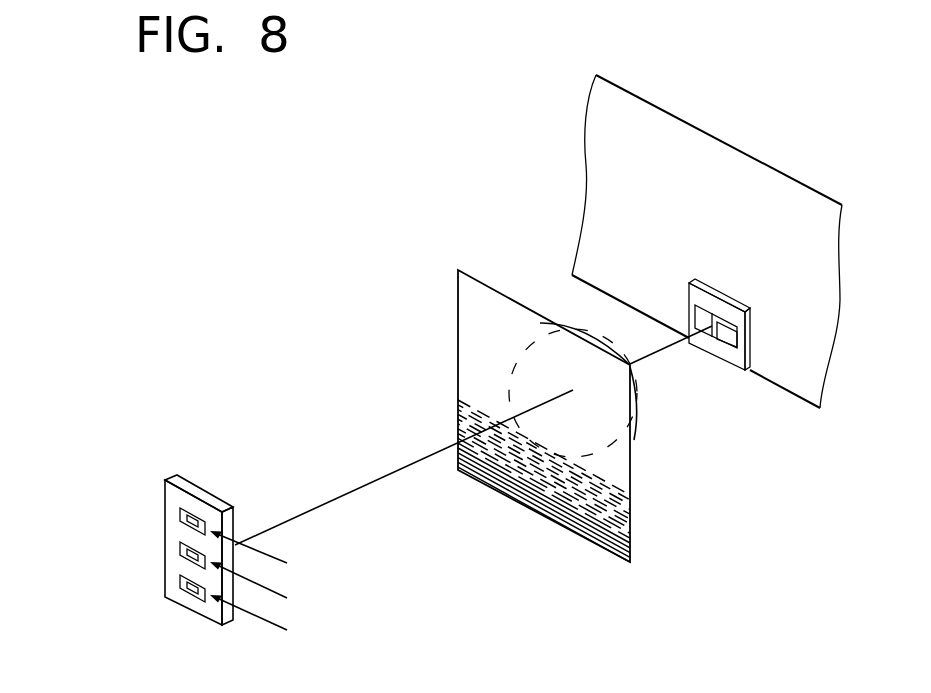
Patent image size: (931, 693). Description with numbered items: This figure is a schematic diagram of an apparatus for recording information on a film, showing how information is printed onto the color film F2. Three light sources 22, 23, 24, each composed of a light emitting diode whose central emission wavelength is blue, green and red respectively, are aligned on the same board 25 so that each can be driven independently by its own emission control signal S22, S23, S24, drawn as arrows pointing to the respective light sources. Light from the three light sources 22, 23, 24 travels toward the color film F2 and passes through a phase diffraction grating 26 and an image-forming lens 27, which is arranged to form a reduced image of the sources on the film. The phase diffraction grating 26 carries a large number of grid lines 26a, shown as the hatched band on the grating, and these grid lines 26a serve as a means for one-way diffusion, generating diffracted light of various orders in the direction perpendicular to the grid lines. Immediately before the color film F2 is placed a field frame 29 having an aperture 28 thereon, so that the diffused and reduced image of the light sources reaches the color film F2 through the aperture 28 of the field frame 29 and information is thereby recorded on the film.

The color film F2 is at (715, 155).
The light source 22 is at (182, 583).
The light source 23 is at (183, 554).
The light source 24 is at (180, 515).
The light receiving element block 25 is at (207, 492).
The phase diffraction grating 26 is at (473, 307).
The grid lines 26a is at (608, 452).
The image-forming lens 27 is at (580, 325).
The aperture 28 is at (697, 336).
The field frame 29 is at (717, 349).
The emission control signal S22 is at (274, 625).
The emission control signal S23 is at (274, 588).
The emission control signal S24 is at (274, 555).